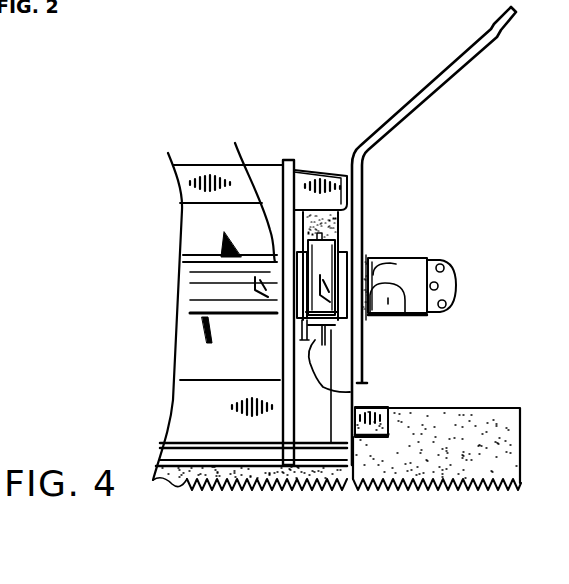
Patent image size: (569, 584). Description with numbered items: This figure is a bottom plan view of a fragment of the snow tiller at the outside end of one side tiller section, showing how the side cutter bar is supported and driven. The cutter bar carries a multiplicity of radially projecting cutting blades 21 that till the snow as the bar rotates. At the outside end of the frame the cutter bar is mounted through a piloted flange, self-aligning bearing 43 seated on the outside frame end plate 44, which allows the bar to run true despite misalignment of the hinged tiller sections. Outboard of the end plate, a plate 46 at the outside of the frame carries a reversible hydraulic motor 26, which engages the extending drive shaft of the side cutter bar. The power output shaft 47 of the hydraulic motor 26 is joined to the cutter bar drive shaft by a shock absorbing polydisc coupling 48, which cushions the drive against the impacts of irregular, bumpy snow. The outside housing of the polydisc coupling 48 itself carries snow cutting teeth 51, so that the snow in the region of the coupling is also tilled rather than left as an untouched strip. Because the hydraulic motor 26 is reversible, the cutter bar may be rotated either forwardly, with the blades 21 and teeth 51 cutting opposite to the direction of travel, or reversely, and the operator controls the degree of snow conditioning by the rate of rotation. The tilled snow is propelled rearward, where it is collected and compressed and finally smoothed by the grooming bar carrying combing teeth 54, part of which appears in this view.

The cutting blades 21 is at (227, 231).
The self-aligning bearing 43 is at (258, 197).
The outside frame end plate 44 is at (297, 172).
The plate 46 is at (363, 230).
The power output shaft 47 is at (400, 315).
The shock absorbing polydisc coupling 48 is at (362, 212).
The hydraulic motor 26 is at (408, 263).
The snow cutting teeth 51 is at (330, 392).
The combing teeth 54 is at (220, 487).